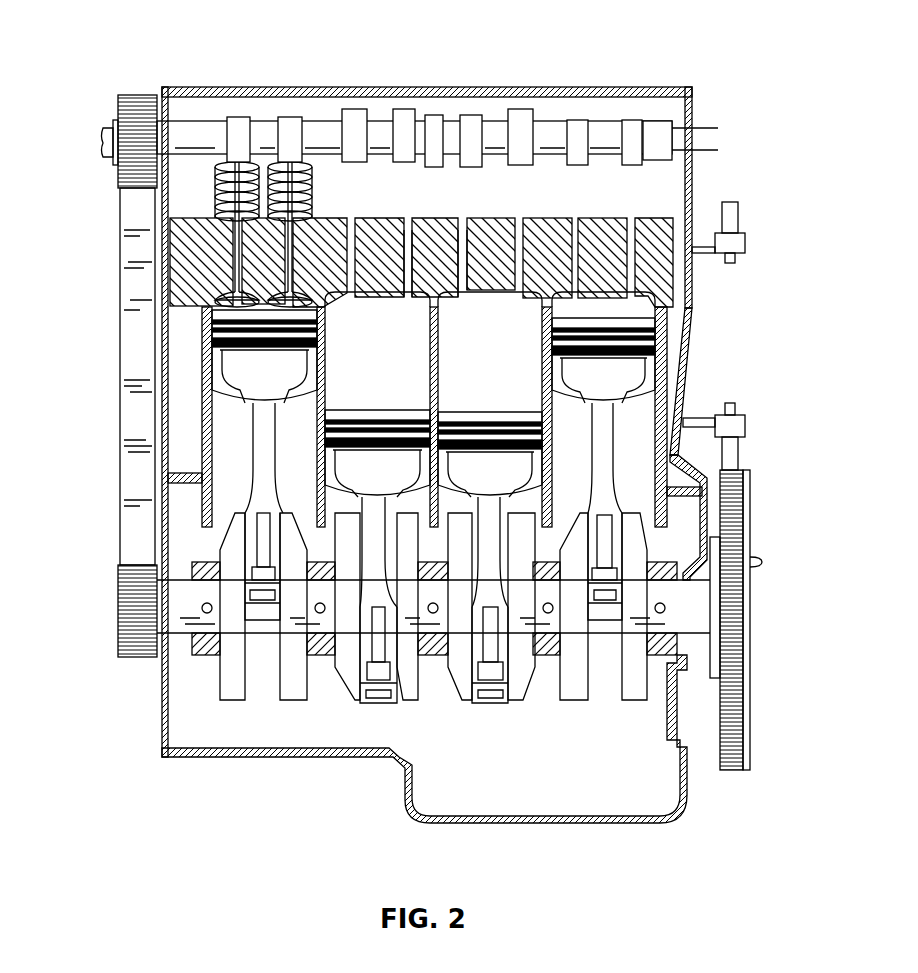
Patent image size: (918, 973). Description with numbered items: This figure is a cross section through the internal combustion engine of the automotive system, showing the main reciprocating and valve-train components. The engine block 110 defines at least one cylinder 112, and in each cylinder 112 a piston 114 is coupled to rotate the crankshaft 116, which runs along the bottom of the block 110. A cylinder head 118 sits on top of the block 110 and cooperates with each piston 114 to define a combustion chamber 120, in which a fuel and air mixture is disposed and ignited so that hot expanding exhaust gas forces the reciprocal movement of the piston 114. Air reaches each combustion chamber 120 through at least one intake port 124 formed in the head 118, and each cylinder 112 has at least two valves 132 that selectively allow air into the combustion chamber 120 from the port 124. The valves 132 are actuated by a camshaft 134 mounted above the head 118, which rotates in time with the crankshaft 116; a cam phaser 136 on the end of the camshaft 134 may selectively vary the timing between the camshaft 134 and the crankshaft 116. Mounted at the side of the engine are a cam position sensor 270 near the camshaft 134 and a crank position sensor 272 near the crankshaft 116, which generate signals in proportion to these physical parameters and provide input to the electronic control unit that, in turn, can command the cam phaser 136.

The engine block 110 is at (160, 373).
The cylinder 112 is at (440, 345).
The piston 114 is at (476, 455).
The crankshaft 116 is at (178, 610).
The cylinder head 118 is at (160, 283).
The combustion chamber 120 is at (690, 316).
The intake port 124 is at (405, 237).
The valves 132 is at (285, 298).
The camshaft 134 is at (256, 120).
The cam phaser 136 is at (118, 114).
The cam position sensor 270 is at (745, 242).
The crank position sensor 272 is at (745, 425).